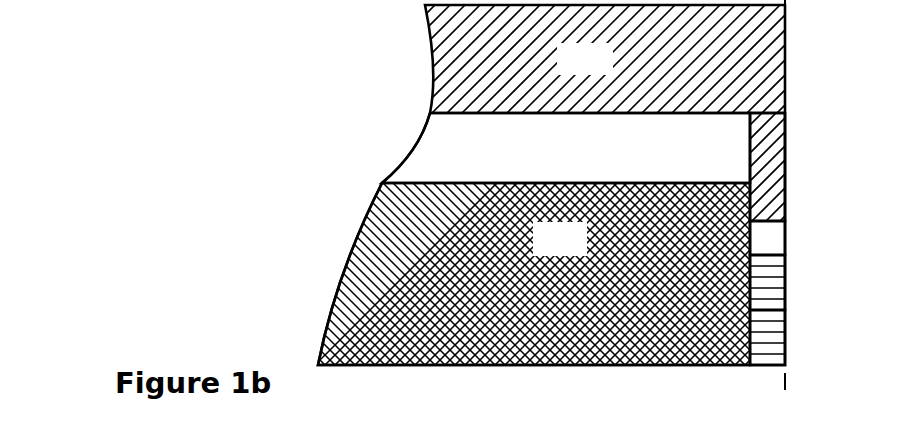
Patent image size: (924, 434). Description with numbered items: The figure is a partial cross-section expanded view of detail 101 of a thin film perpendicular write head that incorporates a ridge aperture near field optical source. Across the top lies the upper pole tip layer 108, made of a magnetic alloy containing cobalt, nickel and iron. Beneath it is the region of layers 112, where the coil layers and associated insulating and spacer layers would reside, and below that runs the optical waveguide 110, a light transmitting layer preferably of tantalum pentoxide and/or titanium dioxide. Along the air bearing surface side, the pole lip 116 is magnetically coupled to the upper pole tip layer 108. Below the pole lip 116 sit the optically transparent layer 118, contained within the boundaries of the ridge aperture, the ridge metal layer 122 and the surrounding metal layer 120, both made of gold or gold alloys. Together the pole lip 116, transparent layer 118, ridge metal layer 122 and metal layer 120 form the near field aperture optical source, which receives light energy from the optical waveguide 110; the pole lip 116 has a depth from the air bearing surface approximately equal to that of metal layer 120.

The detail 101 is at (308, 160).
The upper pole tip layer 108 is at (610, 72).
The layers 112 is at (584, 160).
The optical waveguide 110 is at (585, 250).
The pole lip 116 is at (770, 143).
The optically transparent layer 118 is at (773, 238).
The ridge metal layer 122 is at (770, 271).
The surrounding metal layer 120 is at (763, 338).